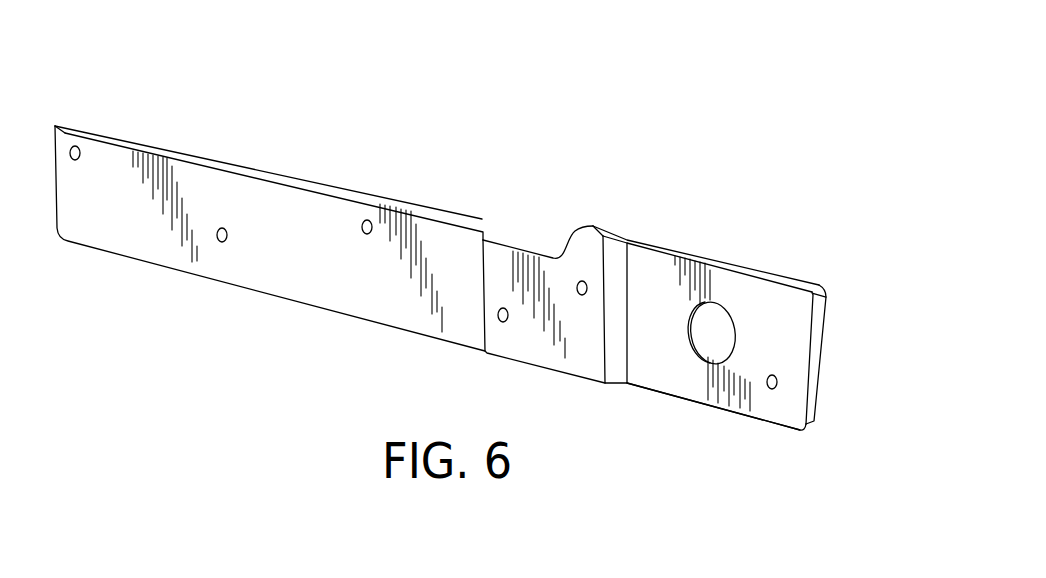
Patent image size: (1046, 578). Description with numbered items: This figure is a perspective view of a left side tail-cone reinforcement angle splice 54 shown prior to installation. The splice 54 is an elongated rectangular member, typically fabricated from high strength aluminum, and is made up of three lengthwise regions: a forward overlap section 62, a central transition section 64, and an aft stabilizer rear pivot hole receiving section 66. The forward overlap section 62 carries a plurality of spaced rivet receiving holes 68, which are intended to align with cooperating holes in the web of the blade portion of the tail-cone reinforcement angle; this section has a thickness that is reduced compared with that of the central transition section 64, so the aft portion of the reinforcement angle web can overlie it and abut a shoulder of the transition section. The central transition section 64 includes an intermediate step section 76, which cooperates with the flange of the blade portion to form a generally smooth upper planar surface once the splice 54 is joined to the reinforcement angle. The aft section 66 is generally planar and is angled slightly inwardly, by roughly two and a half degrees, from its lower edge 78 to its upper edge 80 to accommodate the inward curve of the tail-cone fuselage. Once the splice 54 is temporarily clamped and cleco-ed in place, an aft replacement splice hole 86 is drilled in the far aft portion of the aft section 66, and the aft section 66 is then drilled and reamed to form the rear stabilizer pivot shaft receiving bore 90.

The tail-cone reinforcement angle splice 54 is at (477, 263).
The forward overlap section 62 is at (210, 200).
The central transition section 64 is at (497, 278).
The aft stabilizer rear pivot hole receiving section 66 is at (772, 303).
The rivet receiving holes 68 is at (74, 146).
The intermediate step section 76 is at (615, 226).
The lower edge 78 is at (712, 406).
The upper edge 80 is at (773, 270).
The aft replacement splice hole 86 is at (778, 382).
The rear stabilizer pivot shaft receiving bore 90 is at (737, 335).